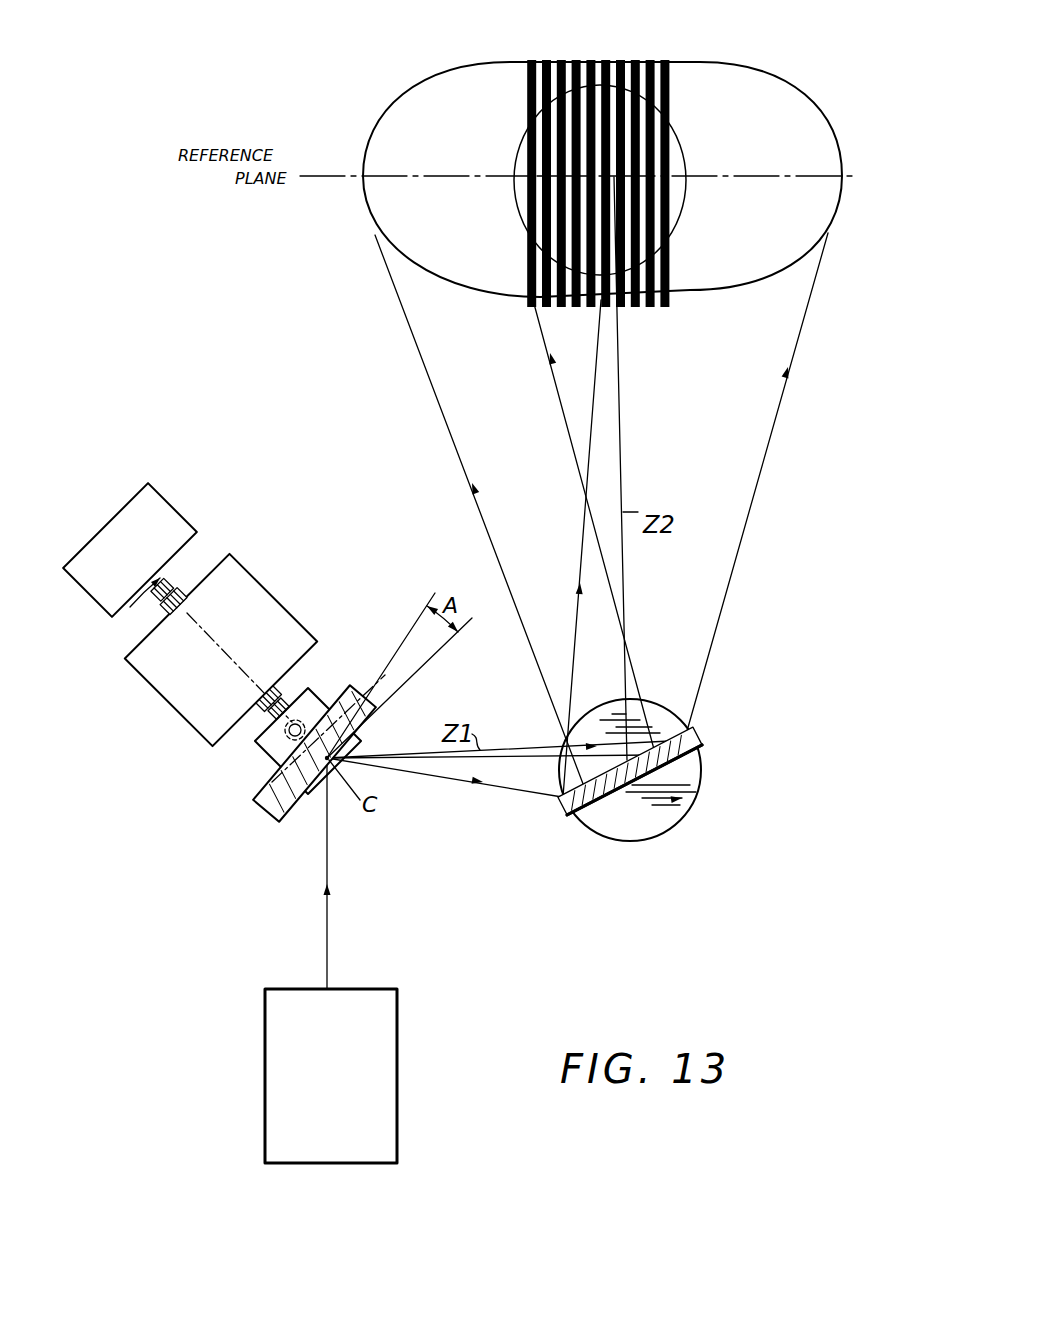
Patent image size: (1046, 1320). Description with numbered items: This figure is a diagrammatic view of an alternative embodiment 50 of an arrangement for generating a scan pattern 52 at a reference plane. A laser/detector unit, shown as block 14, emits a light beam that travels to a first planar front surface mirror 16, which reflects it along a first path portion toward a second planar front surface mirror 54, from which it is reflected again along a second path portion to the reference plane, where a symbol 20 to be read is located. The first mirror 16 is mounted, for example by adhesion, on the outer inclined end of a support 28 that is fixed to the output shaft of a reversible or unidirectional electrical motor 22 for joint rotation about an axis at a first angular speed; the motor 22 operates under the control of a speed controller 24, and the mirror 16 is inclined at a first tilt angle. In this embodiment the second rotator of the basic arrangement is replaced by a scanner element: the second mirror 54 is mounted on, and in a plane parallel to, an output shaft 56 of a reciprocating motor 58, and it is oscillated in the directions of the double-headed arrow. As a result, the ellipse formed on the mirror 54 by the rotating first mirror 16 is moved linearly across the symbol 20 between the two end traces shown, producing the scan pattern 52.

The laser/detector 14 is at (268, 1020).
The first planar front surface mirror 16 is at (272, 818).
The symbol 20 is at (556, 213).
The electrical motor 22 is at (268, 597).
The speed controller 24 is at (162, 503).
The support 28 is at (312, 694).
The embodiment for generating a scan pattern 50 is at (505, 843).
The scan pattern 52 is at (797, 79).
The second planar front surface mirror 54 is at (703, 743).
The output shaft 56 is at (622, 828).
The reciprocating motor 58 is at (688, 791).